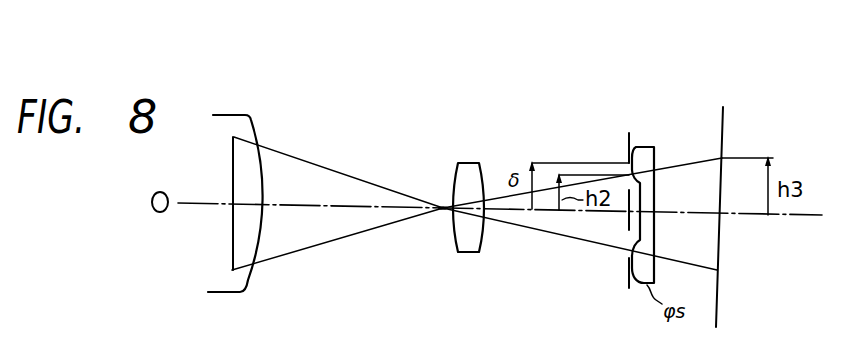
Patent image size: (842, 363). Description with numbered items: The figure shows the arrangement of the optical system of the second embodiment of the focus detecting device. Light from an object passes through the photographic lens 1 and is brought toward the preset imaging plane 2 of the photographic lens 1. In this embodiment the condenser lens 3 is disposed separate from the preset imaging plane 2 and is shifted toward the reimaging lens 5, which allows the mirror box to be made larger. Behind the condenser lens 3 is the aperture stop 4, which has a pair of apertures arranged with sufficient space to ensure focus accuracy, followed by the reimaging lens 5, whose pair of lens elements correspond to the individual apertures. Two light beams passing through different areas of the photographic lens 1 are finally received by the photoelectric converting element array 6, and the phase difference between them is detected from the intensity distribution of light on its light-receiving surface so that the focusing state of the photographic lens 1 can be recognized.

The photographic lens 1 is at (253, 127).
The preset imaging plane 2 is at (441, 210).
The condenser lens 3 is at (455, 170).
The aperture stop 4 is at (629, 136).
The reimaging lens 5 is at (655, 147).
The photoelectric converting element array 6 is at (723, 122).